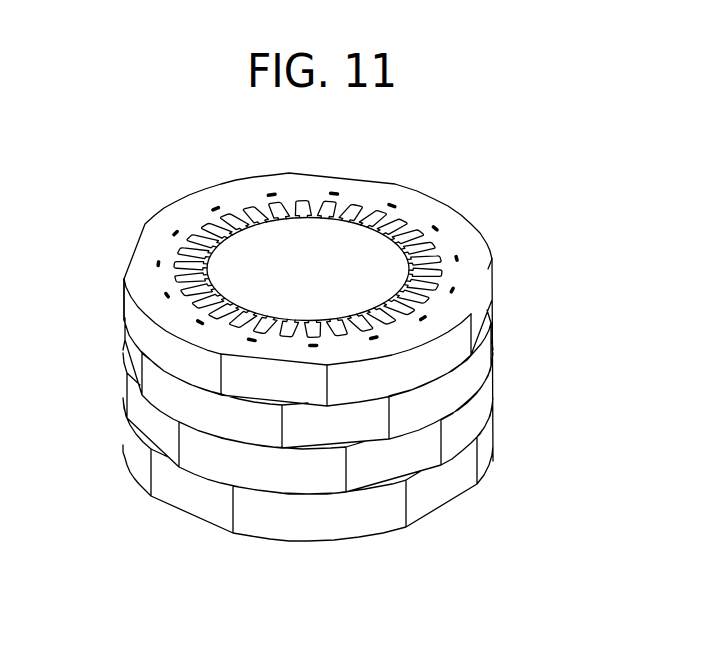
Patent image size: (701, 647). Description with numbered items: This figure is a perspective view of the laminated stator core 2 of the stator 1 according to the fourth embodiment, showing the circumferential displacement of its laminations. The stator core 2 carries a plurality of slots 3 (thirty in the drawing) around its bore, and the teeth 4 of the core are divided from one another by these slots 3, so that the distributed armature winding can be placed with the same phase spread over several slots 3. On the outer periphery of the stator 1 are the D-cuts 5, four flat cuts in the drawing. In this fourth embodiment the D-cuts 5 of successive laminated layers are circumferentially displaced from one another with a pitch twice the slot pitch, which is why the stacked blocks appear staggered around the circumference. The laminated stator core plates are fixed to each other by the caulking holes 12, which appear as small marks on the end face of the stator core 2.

The stator 1 is at (421, 199).
The stator core 2 is at (457, 237).
The slots 3 is at (437, 286).
The teeth 4 is at (455, 292).
The D-cuts 5 is at (140, 250).
The caulking holes 12 is at (160, 298).